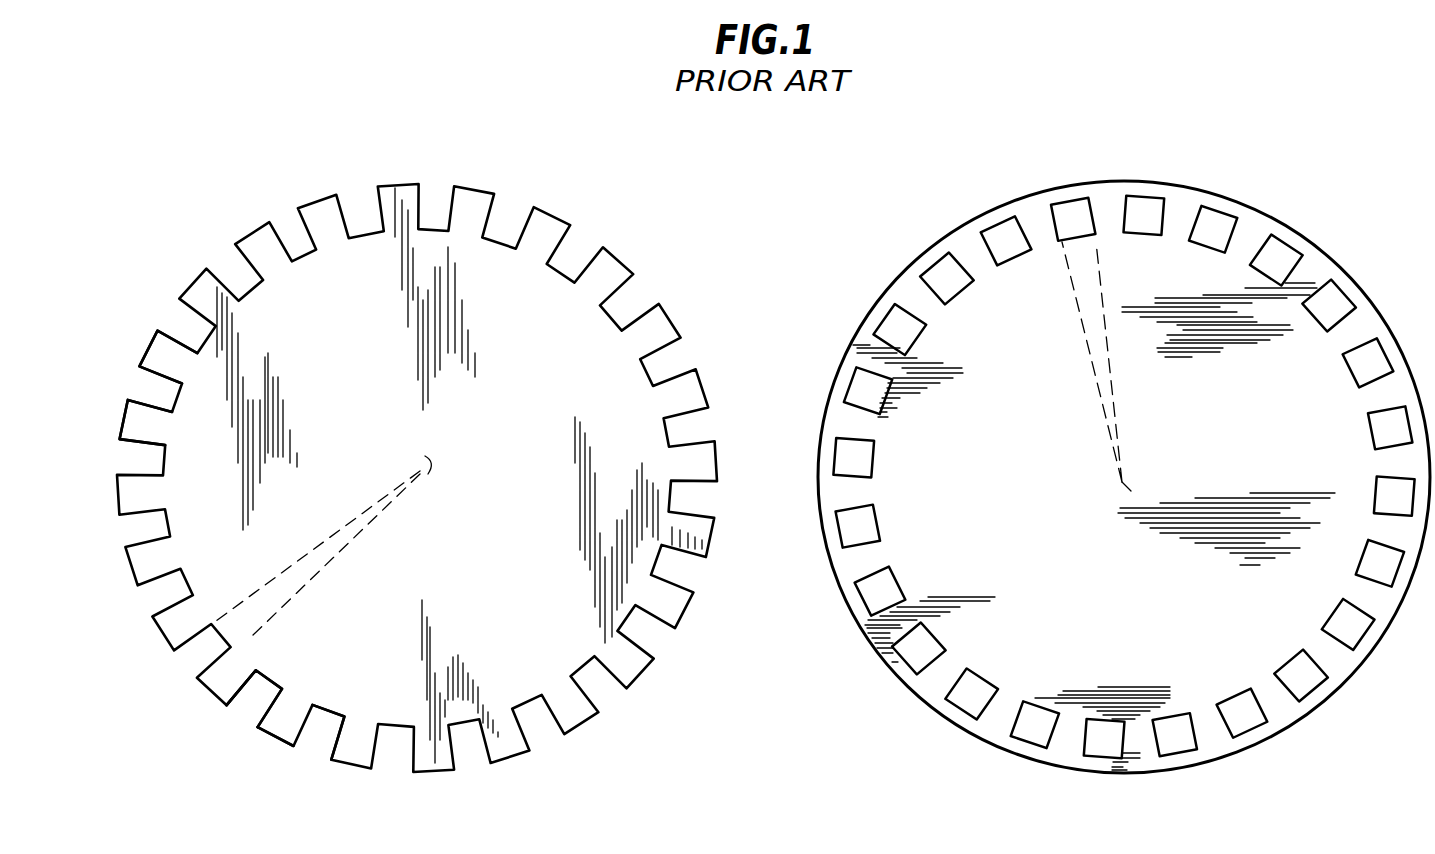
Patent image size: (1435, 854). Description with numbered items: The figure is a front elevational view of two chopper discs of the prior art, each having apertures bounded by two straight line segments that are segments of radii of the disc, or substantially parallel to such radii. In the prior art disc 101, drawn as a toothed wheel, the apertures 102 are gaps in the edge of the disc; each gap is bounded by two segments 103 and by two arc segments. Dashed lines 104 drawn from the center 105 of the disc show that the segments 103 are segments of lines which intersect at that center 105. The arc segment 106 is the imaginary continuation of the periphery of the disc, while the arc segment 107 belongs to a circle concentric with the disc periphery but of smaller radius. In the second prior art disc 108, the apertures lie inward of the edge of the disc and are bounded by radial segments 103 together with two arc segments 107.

The prior art disc 101 is at (219, 243).
The apertures 102 is at (130, 453).
The segments 103 is at (270, 707).
The dashed lines 104 is at (357, 534).
The center 105 is at (1145, 491).
The arc segment 106 is at (300, 744).
The arc segment 107 is at (330, 711).
The prior art disc 108 is at (936, 231).